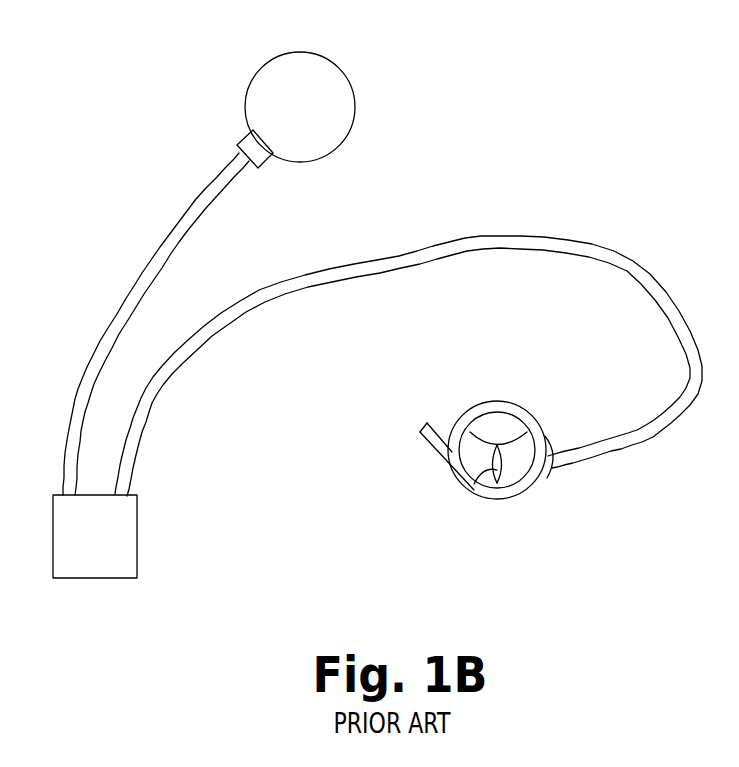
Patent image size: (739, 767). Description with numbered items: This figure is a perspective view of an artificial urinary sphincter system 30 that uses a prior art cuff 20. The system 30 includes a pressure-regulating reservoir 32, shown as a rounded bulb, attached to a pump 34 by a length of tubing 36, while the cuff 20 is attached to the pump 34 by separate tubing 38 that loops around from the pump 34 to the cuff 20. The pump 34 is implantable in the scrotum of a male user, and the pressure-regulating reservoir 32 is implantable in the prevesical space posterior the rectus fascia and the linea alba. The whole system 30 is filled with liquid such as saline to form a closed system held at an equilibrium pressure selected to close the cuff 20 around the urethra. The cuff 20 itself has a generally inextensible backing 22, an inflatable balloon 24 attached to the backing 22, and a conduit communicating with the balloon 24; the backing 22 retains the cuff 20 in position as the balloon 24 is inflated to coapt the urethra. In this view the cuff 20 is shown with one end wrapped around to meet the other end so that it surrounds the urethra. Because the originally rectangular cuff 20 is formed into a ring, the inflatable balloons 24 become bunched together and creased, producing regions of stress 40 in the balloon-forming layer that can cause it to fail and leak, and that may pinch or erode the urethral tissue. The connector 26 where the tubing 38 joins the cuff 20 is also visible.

The cuff 20 is at (461, 391).
The backing 22 is at (490, 498).
The inflatable balloon 24 is at (502, 425).
The attachment connector 26 is at (552, 473).
The artificial urinary sphincter system 30 is at (563, 90).
The pressure-regulating reservoir 32 is at (253, 82).
The pump 34 is at (90, 567).
The tubing 36 is at (122, 303).
The tubing 38 is at (505, 233).
The regions of stress 40 is at (470, 488).